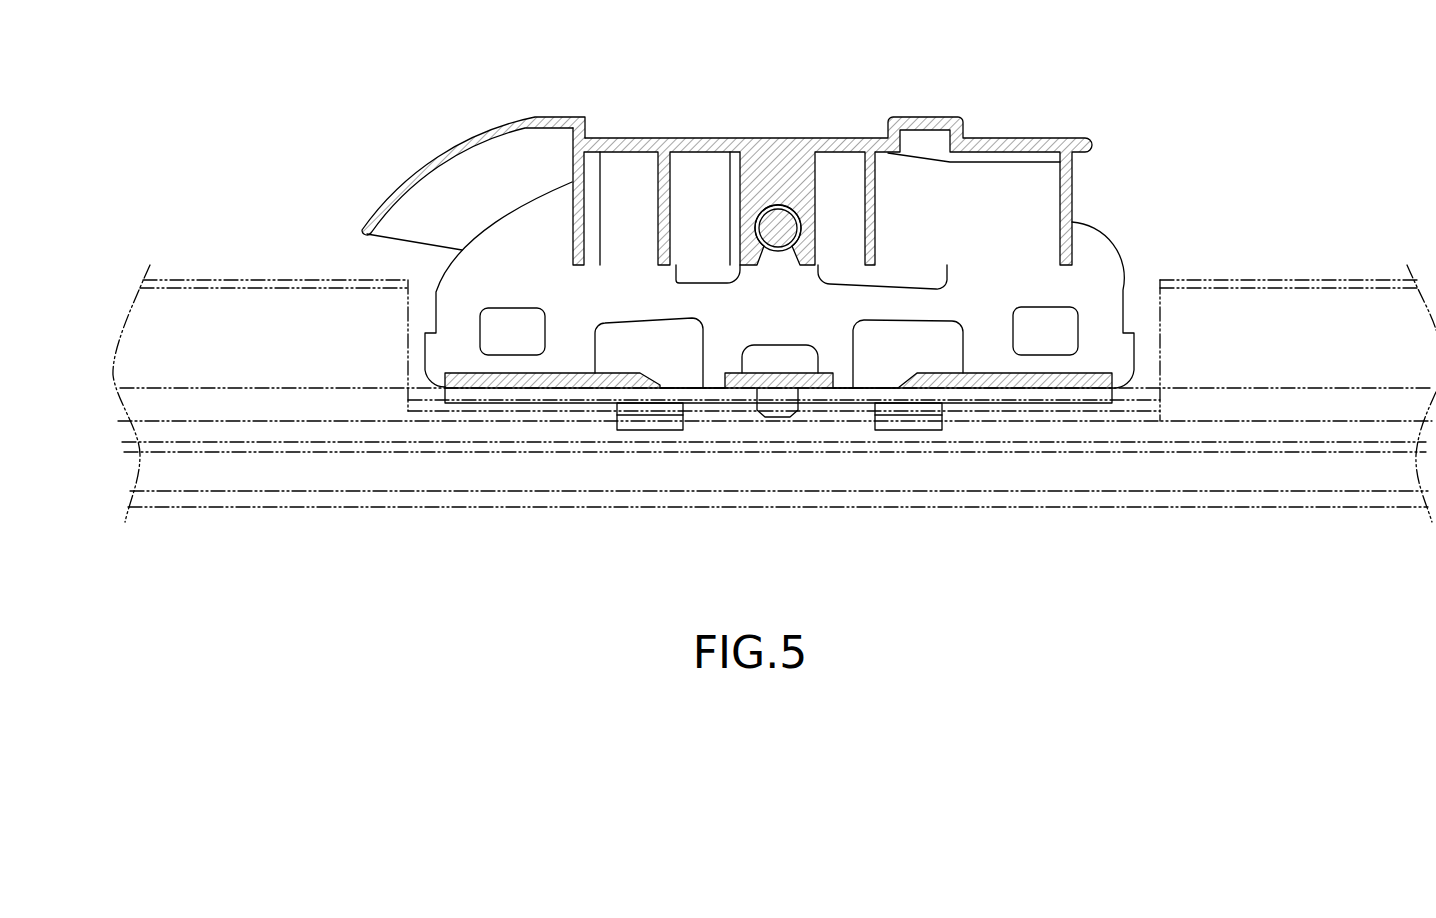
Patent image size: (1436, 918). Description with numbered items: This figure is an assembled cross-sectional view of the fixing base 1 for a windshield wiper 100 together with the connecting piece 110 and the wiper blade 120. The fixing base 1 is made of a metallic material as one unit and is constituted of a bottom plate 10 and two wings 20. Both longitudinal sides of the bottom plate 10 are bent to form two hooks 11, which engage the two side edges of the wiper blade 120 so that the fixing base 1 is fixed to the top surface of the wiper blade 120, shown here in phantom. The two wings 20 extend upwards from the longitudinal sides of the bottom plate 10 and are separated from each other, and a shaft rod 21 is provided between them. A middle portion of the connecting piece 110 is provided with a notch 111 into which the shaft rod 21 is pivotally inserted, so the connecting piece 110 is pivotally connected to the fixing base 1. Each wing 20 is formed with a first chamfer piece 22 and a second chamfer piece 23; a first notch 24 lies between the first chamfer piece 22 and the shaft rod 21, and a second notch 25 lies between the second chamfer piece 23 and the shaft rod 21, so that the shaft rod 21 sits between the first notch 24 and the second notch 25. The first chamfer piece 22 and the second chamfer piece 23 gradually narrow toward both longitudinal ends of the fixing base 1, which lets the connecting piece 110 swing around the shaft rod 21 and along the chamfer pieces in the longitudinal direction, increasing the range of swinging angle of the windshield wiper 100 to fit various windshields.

The fixing base 1 is at (1097, 227).
The windshield wiper 100 is at (762, 48).
The connecting piece 110 is at (535, 117).
The notch 111 is at (796, 209).
The wing 20 is at (497, 213).
The shaft rod 21 is at (778, 224).
The first chamfer piece 22 is at (488, 243).
The second chamfer piece 23 is at (1091, 250).
The first notch 24 is at (693, 283).
The second notch 25 is at (917, 283).
The bottom plate 10 is at (1063, 385).
The hook 11 is at (907, 425).
The wiper blade 120 is at (358, 497).